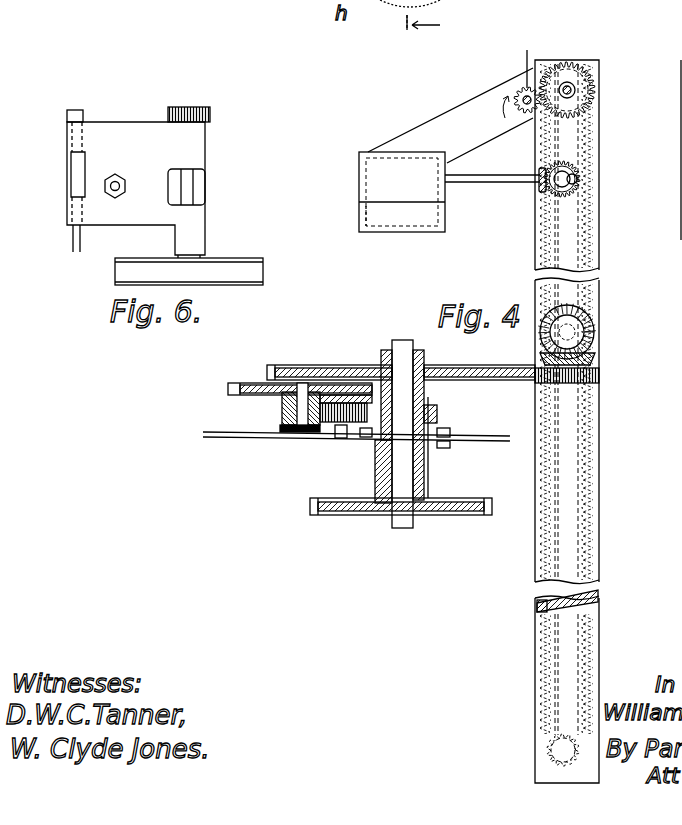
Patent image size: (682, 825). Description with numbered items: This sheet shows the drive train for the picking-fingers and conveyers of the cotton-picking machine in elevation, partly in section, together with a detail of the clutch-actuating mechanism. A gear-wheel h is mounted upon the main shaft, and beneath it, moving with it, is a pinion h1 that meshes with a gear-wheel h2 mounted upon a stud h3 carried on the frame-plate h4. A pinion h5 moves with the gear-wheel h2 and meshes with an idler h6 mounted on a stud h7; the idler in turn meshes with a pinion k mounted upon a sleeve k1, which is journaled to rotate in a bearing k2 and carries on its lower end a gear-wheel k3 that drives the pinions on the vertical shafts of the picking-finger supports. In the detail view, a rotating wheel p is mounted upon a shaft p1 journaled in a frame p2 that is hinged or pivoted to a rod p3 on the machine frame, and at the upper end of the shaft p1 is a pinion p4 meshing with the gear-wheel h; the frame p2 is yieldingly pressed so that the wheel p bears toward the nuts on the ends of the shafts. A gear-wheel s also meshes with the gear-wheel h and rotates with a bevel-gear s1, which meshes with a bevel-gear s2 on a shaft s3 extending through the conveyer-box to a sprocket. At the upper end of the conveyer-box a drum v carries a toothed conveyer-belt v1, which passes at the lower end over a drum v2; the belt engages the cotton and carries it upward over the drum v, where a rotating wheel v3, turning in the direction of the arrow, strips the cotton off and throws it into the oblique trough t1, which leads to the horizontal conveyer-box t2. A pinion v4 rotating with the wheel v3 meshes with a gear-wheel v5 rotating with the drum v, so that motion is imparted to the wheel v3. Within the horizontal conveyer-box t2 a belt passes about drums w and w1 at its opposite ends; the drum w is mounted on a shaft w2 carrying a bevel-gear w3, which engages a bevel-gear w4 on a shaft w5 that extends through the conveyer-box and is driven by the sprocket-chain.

In FIG. 6, the rotating wheel p is at (247, 272).
In FIG. 6, the shaft p1 is at (192, 190).
In FIG. 6, the frame p2 is at (136, 188).
In FIG. 6, the rod p3 is at (73, 172).
In FIG. 6, the pinion p4 is at (212, 113).
In FIG. 4, the drum v is at (580, 78).
In FIG. 4, the conveyer-belt v1 is at (600, 133).
In FIG. 4, the drum v2 is at (548, 750).
In FIG. 4, the rotating wheel v3 is at (521, 87).
In FIG. 4, the pinion v4 is at (537, 62).
In FIG. 4, the gear-wheel v5 is at (558, 72).
In FIG. 4, the oblique trough t1 is at (447, 118).
In FIG. 4, the horizontal conveyer-box t2 is at (446, 203).
In FIG. 4, the drum w is at (362, 178).
In FIG. 4, the drum w1 is at (366, 214).
In FIG. 4, the shaft w2 is at (477, 177).
In FIG. 4, the bevel-gear w3 is at (540, 187).
In FIG. 4, the bevel-gear w4 is at (580, 186).
In FIG. 4, the shaft w5 is at (578, 172).
In FIG. 4, the gear-wheel s is at (600, 378).
In FIG. 4, the bevel-gear s1 is at (592, 358).
In FIG. 4, the bevel-gear s2 is at (585, 333).
In FIG. 4, the shaft s3 is at (572, 328).
In FIG. 4, the gear-wheel h is at (277, 366).
In FIG. 4, the pinion h1 is at (426, 392).
In FIG. 4, the gear-wheel h2 is at (232, 387).
In FIG. 4, the stud h3 is at (302, 430).
In FIG. 4, the frame-plate h4 is at (237, 438).
In FIG. 4, the pinion h5 is at (283, 408).
In FIG. 4, the idler h6 is at (340, 428).
In FIG. 4, the stud h7 is at (341, 432).
In FIG. 4, the pinion k is at (440, 418).
In FIG. 4, the sleeve k1 is at (430, 467).
In FIG. 4, the bearing k2 is at (430, 484).
In FIG. 4, the gear-wheel k3 is at (423, 510).